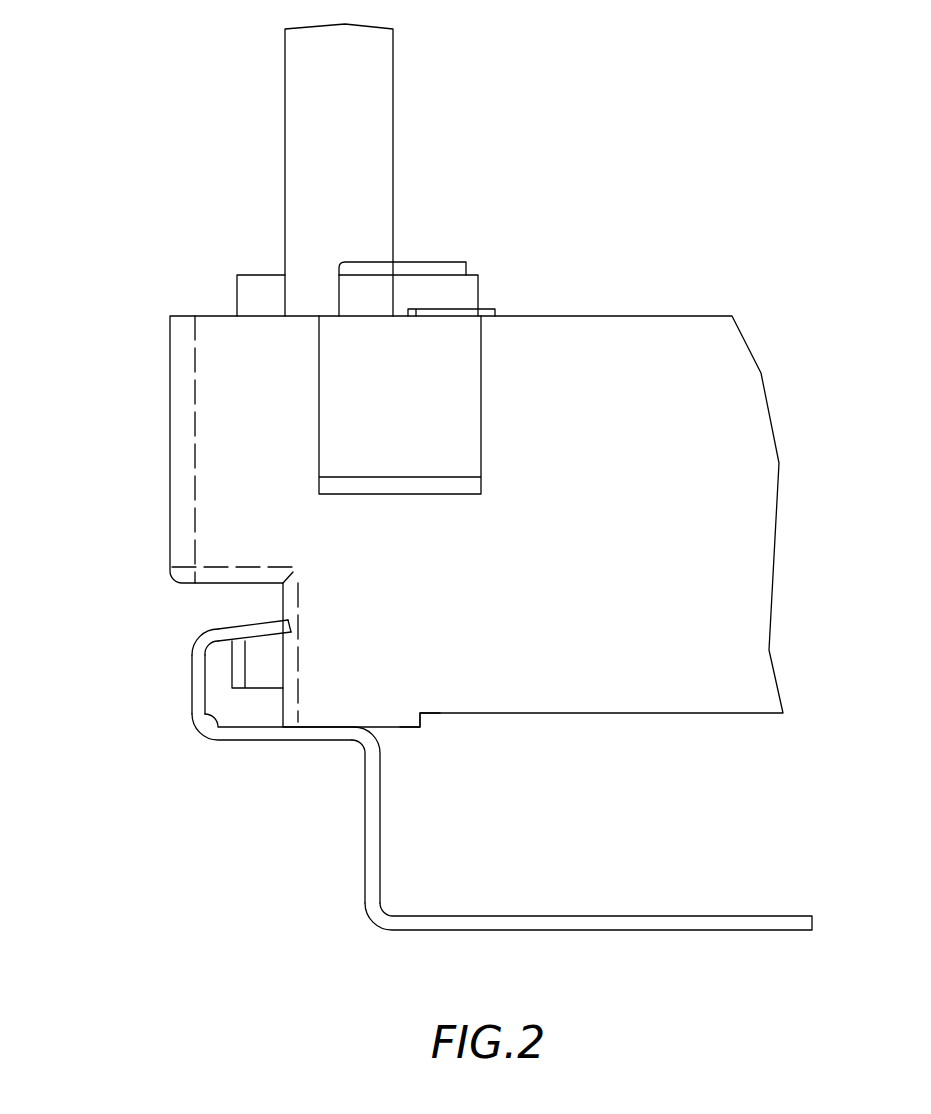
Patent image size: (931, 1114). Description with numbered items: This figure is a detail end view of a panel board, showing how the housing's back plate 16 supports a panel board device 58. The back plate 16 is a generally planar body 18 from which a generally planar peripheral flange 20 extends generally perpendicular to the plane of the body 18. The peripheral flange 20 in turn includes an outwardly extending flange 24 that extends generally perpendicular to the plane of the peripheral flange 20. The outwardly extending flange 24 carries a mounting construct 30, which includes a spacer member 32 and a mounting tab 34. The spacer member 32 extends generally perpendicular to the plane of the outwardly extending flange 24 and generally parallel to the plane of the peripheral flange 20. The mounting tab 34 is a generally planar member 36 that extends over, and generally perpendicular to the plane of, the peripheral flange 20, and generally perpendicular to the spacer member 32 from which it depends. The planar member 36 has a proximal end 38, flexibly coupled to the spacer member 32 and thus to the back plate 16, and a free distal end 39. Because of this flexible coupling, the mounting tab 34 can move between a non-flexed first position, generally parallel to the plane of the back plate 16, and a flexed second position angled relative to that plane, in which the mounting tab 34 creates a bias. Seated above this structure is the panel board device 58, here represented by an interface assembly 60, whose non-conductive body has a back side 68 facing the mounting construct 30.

The back plate 16 is at (433, 777).
The back plate body 18 is at (553, 930).
The peripheral flange 20 is at (365, 810).
The outwardly extending flange 24 is at (278, 740).
The mounting construct 30 is at (199, 642).
The spacer member 32 is at (192, 678).
The mounting tab 34 is at (207, 632).
The mounting tab planar member 36 is at (223, 628).
The proximal end 38 is at (192, 645).
The distal end 39 is at (288, 621).
The panel board device 58 is at (560, 343).
The interface assembly 60 is at (628, 328).
The back side 68 is at (387, 728).